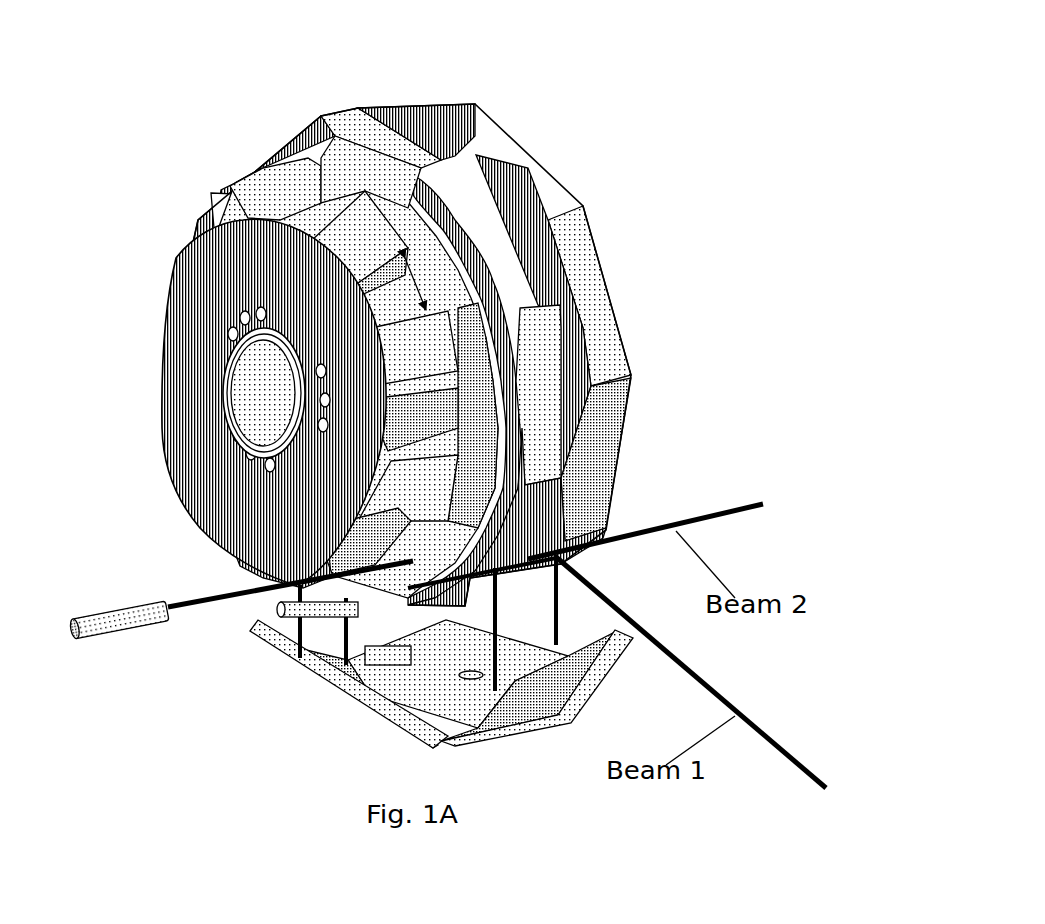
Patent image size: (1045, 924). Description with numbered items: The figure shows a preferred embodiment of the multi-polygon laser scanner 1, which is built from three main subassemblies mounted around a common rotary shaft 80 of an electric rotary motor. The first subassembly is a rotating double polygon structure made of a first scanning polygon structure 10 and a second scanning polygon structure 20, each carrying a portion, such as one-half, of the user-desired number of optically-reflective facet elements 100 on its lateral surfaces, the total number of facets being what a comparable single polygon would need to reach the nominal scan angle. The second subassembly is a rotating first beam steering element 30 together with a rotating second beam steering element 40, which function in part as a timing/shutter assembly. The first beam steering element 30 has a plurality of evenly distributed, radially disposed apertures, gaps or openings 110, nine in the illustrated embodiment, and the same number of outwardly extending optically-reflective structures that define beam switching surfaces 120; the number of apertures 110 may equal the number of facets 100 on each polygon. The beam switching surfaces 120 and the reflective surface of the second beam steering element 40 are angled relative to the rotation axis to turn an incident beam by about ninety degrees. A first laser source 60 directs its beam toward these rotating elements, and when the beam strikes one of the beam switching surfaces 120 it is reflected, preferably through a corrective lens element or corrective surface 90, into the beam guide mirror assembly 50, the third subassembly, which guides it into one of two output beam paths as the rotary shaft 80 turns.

The multi-polygon laser scanner 1 is at (416, 310).
The first scanning polygon structure 10 is at (471, 355).
The second scanning polygon structure 20 is at (500, 243).
The first beam steering element 30 is at (463, 343).
The second beam steering element 40 is at (332, 173).
The beam guide mirror assembly 50 is at (423, 625).
The first laser source 60 is at (122, 610).
The rotary shaft 80 is at (250, 400).
The corrective lens element or corrective surface 90 is at (310, 603).
The optically-reflective facet elements 100 is at (555, 455).
The apertures, gaps or openings 110 is at (403, 255).
The beam switching surfaces 120 is at (228, 359).